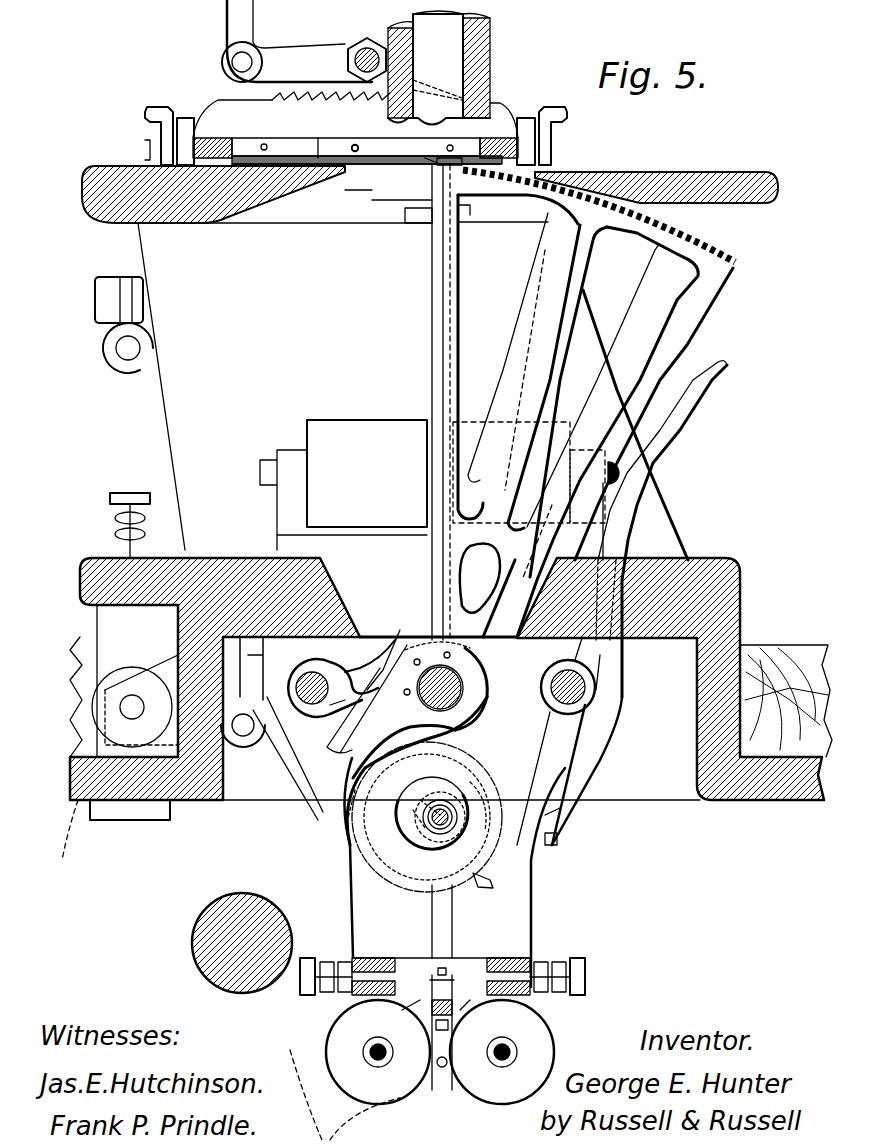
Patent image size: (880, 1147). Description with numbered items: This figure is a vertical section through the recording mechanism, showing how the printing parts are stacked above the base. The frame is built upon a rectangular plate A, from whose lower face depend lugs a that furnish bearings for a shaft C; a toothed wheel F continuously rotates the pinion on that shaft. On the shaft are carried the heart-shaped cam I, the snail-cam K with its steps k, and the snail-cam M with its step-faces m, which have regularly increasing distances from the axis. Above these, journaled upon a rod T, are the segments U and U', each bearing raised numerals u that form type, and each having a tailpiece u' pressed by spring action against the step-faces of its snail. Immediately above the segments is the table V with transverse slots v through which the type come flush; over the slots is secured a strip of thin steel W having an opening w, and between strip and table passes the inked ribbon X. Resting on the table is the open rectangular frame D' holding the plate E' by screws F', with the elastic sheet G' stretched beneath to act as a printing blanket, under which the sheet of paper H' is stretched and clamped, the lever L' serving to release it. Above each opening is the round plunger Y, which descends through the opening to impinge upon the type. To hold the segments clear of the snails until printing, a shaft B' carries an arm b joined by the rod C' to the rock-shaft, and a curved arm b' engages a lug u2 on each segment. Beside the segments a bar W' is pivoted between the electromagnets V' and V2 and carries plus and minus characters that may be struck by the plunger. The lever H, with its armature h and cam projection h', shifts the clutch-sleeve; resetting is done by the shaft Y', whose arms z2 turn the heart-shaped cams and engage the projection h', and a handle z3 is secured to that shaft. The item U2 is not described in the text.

The plunger Y is at (439, 68).
The open rectangular frame D' is at (366, 119).
The plate E' is at (367, 138).
The sheet of rubber or felt G' is at (329, 134).
The screws F' is at (362, 132).
The opening w is at (432, 158).
The inked ribbon X is at (455, 160).
The lever L' is at (362, 124).
The table V is at (424, 190).
The transverse slots v is at (366, 186).
The sheet of paper H' is at (366, 203).
The strip of thin steel W is at (415, 208).
The bar W' is at (421, 402).
The numerals u is at (599, 201).
The segment U' is at (603, 375).
The segments U is at (578, 421).
The handle z3 is at (668, 445).
The electromagnet V' is at (343, 467).
The electromagnet V2 is at (482, 432).
The rectangular plate A is at (200, 560).
The lug u2 is at (387, 667).
The rod C' is at (263, 668).
The shaft B' is at (333, 679).
The curved arm b' is at (336, 697).
The arm b is at (243, 746).
The tailpiece u' is at (391, 711).
The rod T is at (458, 700).
The lugs a is at (310, 777).
The shaft Y' is at (590, 676).
The arms z2 is at (545, 815).
The snail-cam K is at (355, 848).
The steps k is at (352, 797).
The step-faces m is at (482, 797).
The heart-shaped cam I is at (442, 792).
The snail-cam M is at (428, 806).
The shaft C is at (467, 817).
The lever H is at (423, 987).
The cam projection h' is at (480, 896).
The armature h is at (441, 1016).
The wheel U2 is at (440, 1052).
The toothed wheel F is at (233, 970).